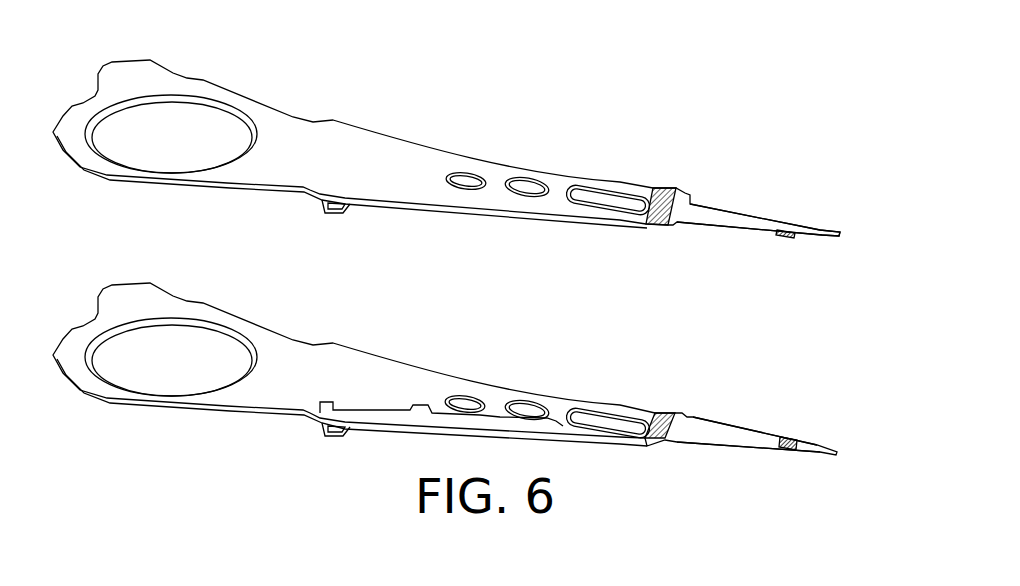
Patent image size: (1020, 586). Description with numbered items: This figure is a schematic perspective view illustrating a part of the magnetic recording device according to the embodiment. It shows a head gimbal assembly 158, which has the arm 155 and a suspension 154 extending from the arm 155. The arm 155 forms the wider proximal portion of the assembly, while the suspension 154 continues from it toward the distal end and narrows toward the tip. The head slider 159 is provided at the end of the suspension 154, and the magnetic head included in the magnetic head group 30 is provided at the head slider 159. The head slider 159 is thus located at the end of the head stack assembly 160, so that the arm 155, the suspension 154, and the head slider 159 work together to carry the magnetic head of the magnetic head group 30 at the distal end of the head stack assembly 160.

The head stack assembly 160 is at (366, 88).
The head gimbal assembly 158 is at (530, 128).
The arm 155 is at (427, 167).
The suspension 154 is at (758, 218).
The head slider 159 is at (790, 238).
The magnetic head group 30 is at (816, 198).